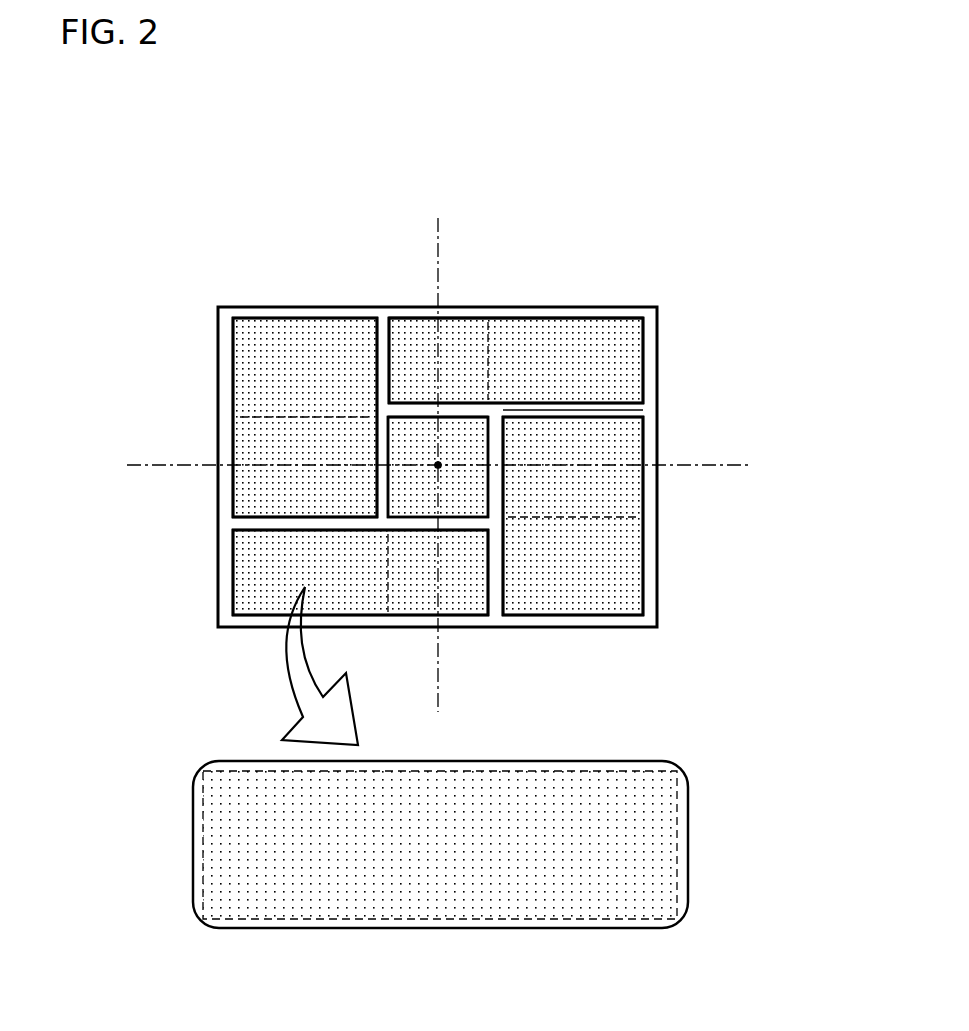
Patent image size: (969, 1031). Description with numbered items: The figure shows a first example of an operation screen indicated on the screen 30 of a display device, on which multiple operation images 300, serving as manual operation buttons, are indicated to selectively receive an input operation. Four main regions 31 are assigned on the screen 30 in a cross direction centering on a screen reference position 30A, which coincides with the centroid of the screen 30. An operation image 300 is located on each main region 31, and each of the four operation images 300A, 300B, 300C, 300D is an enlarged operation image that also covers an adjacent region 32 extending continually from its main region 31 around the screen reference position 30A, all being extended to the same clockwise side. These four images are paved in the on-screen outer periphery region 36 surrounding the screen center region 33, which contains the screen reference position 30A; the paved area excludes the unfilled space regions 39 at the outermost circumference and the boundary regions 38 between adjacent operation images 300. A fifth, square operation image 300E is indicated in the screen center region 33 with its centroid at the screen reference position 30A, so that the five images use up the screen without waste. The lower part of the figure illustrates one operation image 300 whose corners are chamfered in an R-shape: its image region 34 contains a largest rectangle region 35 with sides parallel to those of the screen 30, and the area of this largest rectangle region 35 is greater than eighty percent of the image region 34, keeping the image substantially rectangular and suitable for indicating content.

The screen 30 is at (576, 306).
The screen reference position 30A is at (439, 467).
The main region 31 is at (450, 320).
The adjacent region 32 is at (603, 320).
The screen center region 33 is at (403, 496).
The image region 34 is at (602, 760).
The largest rectangle region 35 is at (690, 843).
The on-screen outer periphery region 36 is at (573, 412).
The boundary region 38 is at (425, 417).
The unfilled space region 39 is at (478, 318).
The operation image 300 is at (569, 900).
The operation image 300A is at (243, 440).
The operation image 300B is at (459, 602).
The operation image 300C is at (624, 575).
The operation image 300D is at (634, 357).
The operation image 300E is at (403, 421).